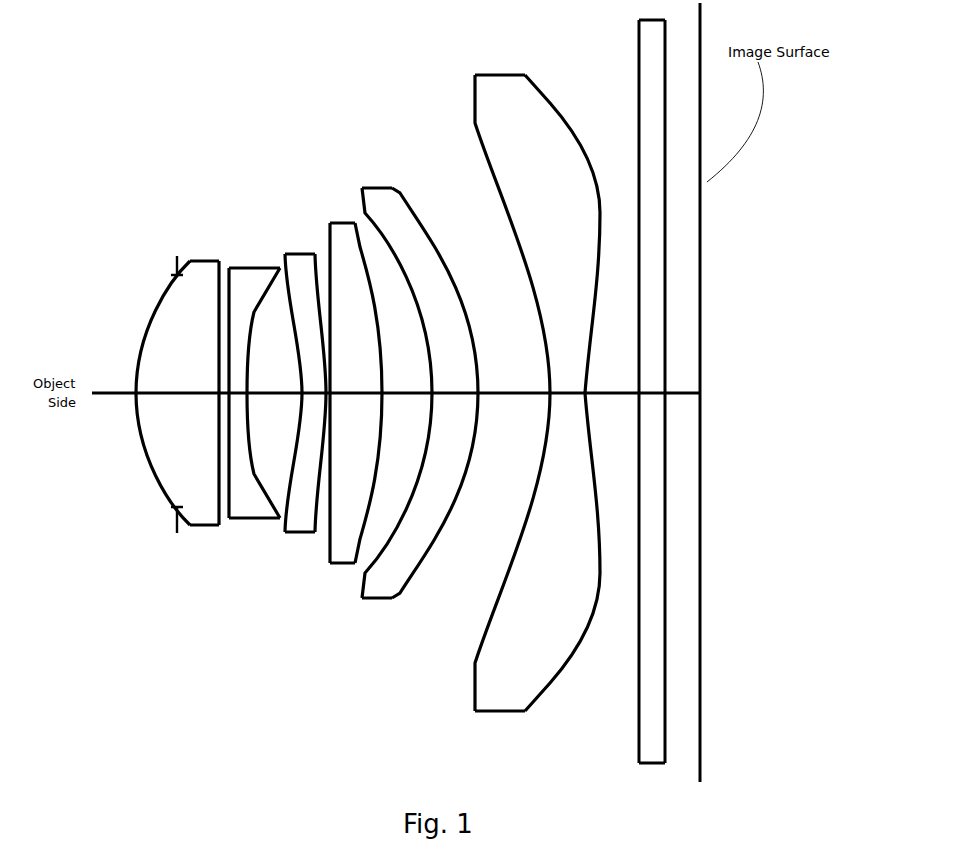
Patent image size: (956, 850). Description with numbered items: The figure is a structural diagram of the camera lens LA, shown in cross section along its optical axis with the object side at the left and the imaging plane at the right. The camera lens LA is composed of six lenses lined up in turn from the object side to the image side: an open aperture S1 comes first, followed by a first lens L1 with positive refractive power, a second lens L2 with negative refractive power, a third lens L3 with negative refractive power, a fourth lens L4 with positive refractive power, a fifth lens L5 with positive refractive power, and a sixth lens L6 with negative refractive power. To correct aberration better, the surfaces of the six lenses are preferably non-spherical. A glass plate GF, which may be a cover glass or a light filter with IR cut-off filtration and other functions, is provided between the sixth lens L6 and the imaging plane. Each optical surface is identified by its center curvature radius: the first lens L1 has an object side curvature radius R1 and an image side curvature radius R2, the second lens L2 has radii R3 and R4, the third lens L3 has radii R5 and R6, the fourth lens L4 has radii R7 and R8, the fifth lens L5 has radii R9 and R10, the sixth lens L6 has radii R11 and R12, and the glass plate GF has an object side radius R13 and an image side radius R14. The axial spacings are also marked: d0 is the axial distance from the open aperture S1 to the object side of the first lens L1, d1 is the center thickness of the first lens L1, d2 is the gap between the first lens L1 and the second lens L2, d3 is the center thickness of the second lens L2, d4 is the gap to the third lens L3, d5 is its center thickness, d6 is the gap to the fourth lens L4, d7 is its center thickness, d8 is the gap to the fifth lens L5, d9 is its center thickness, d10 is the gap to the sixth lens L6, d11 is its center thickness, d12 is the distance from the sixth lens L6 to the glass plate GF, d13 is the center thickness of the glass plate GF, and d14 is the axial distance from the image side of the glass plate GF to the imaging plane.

The camera lens LA is at (165, 91).
The open aperture S1 is at (177, 258).
The first lens L1 is at (163, 381).
The second lens L2 is at (232, 419).
The third lens L3 is at (281, 418).
The fourth lens L4 is at (333, 415).
The fifth lens L5 is at (418, 405).
The sixth lens L6 is at (501, 394).
The glass plate GF is at (586, 389).
The object side curvature radius of the first lens R1 is at (136, 408).
The image side curvature radius of the first lens R2 is at (213, 400).
The object side curvature radius of the second lens R3 is at (229, 410).
The image side curvature radius of the second lens R4 is at (262, 410).
The object side curvature radius of the third lens R5 is at (298, 410).
The image side curvature radius of the third lens R6 is at (322, 412).
The object side curvature radius of the fourth lens R7 is at (330, 430).
The image side curvature radius of the fourth lens R8 is at (380, 430).
The object side curvature radius of the fifth lens R9 is at (428, 440).
The image side curvature radius of the fifth lens R10 is at (476, 430).
The object side curvature radius of the sixth lens R11 is at (540, 470).
The image side curvature radius of the sixth lens R12 is at (593, 490).
The object side curvature radius of the glass plate R13 is at (638, 505).
The image side curvature radius of the glass plate R14 is at (664, 545).
The axial distance from the open aperture to the object side of the first lens d0 is at (137, 393).
The center thickness of the first lens d1 is at (177, 386).
The axial distance between the first lens and the second lens d2 is at (220, 260).
The center thickness of the second lens d3 is at (236, 386).
The axial distance between the second lens and the third lens d4 is at (274, 386).
The center thickness of the third lens d5 is at (312, 393).
The axial distance between the third lens and the fourth lens d6 is at (328, 393).
The center thickness of the fourth lens d7 is at (356, 386).
The axial distance between the fourth lens and the fifth lens d8 is at (407, 386).
The center thickness of the fifth lens d9 is at (455, 386).
The axial distance between the fifth lens and the sixth lens d10 is at (514, 386).
The center thickness of the sixth lens d11 is at (560, 393).
The axial distance between the sixth lens and the glass plate d12 is at (612, 386).
The center thickness of the glass plate d13 is at (650, 393).
The axial distance from the glass plate to the imaging plane d14 is at (682, 386).